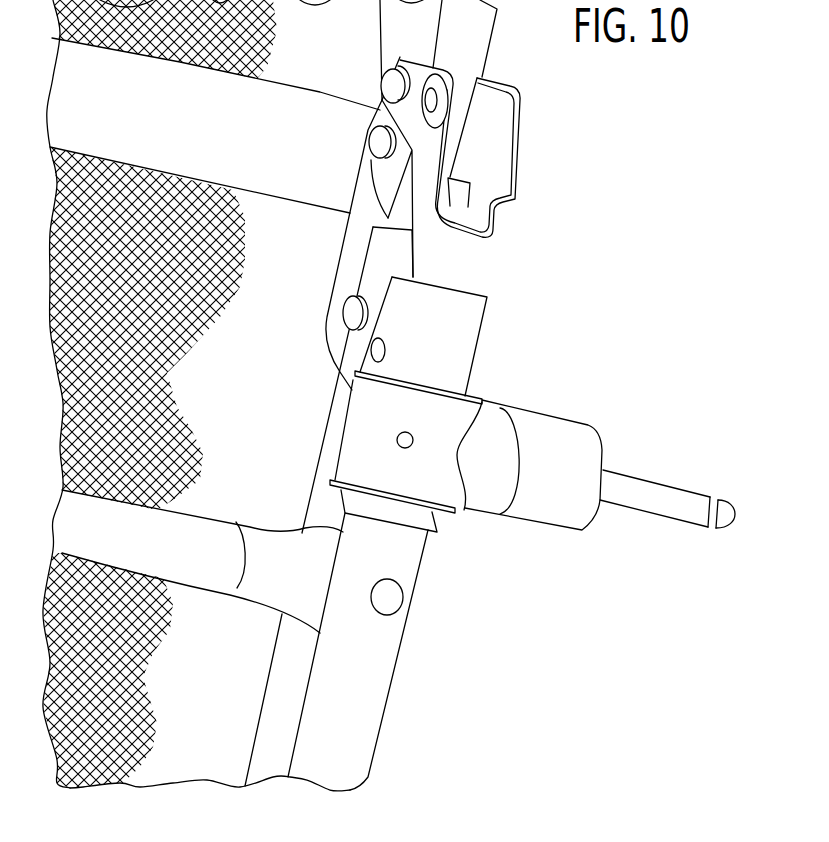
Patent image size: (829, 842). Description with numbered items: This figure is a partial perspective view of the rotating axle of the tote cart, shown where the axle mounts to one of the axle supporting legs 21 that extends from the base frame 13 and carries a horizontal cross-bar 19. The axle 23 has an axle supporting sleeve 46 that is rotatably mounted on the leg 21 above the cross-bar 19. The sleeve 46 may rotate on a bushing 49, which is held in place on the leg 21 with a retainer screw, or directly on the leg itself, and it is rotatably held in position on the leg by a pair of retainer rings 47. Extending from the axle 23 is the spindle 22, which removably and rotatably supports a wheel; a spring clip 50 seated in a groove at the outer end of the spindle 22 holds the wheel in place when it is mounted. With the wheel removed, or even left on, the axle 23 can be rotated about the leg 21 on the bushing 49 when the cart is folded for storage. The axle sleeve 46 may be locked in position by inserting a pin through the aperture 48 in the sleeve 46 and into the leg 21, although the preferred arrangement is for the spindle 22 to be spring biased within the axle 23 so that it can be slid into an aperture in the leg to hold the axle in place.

The base frame 13 is at (328, 460).
The horizontal cross-bar 19 is at (181, 552).
The axle supporting leg 21 is at (368, 662).
The spindle 22 is at (653, 480).
The axle 23 is at (558, 412).
The axle supporting sleeve 46 is at (435, 417).
The retainer rings 47 is at (425, 382).
The aperture 48 is at (399, 436).
The bushing 49 is at (443, 327).
The spring clip 50 is at (712, 497).